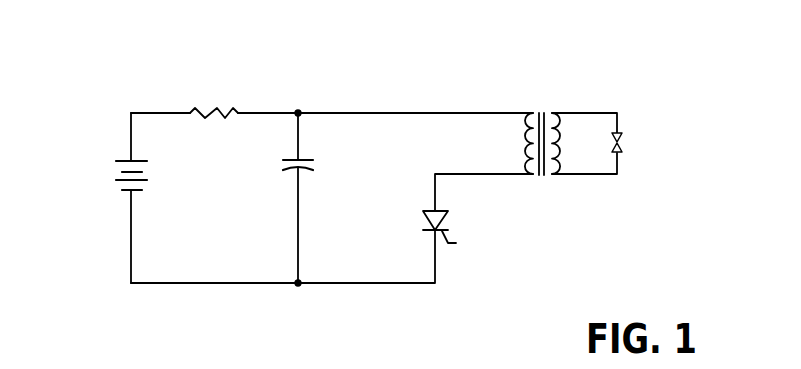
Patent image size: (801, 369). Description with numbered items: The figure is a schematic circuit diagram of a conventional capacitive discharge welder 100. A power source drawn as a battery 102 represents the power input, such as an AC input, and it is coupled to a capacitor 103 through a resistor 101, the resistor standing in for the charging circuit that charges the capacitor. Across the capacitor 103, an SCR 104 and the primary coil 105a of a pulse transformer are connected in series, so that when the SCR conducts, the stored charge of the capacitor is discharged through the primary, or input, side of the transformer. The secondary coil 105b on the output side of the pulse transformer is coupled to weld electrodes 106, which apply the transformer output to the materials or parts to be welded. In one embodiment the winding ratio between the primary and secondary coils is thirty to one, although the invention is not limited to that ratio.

The capacitive discharge welder 100 is at (641, 103).
The resistor 101 is at (218, 112).
The power source (battery) 102 is at (121, 160).
The capacitor 103 is at (300, 158).
The SCR 104 is at (446, 214).
The primary coil 105a is at (533, 112).
The secondary coil 105b is at (553, 176).
The weld electrodes 106 is at (621, 150).